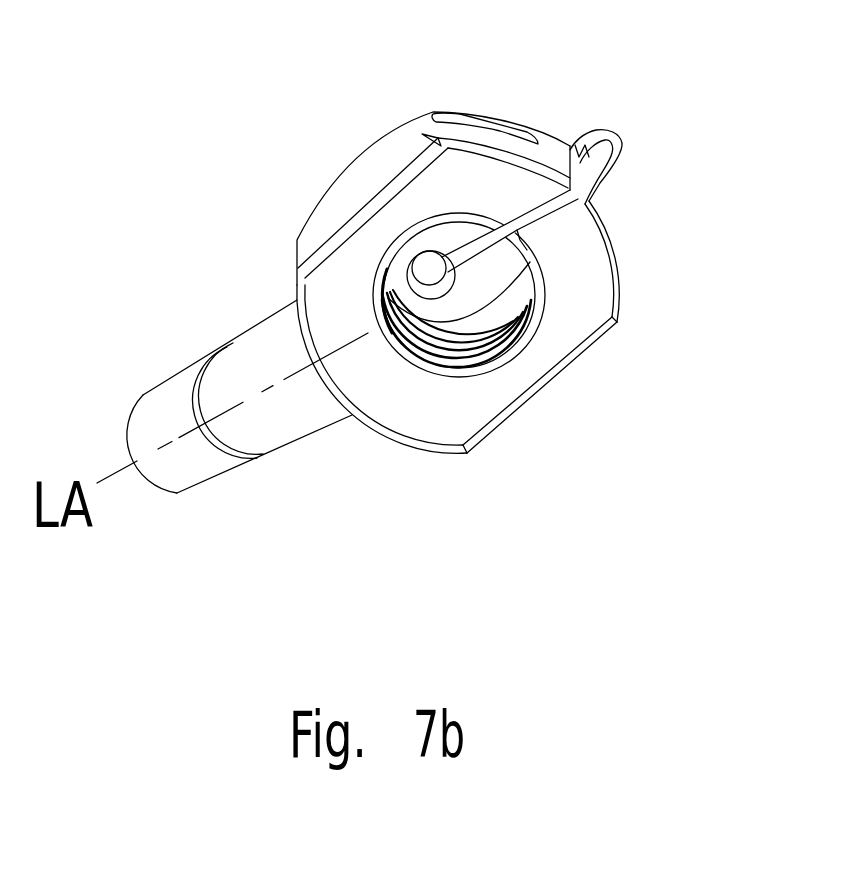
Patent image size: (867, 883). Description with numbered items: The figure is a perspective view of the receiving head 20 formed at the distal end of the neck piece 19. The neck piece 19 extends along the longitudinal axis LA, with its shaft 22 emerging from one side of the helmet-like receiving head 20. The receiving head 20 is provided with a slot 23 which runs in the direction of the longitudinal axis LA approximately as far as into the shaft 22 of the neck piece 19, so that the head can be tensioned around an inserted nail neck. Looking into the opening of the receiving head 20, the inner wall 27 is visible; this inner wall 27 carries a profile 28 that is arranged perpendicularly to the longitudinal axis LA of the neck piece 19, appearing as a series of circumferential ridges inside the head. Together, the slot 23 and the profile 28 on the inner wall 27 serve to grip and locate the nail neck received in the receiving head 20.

The neck piece 19 is at (170, 342).
The receiving head 20 is at (387, 110).
The shaft 22 is at (302, 438).
The slot 23 is at (524, 236).
The inner wall 27 is at (472, 363).
The profile 28 is at (502, 332).